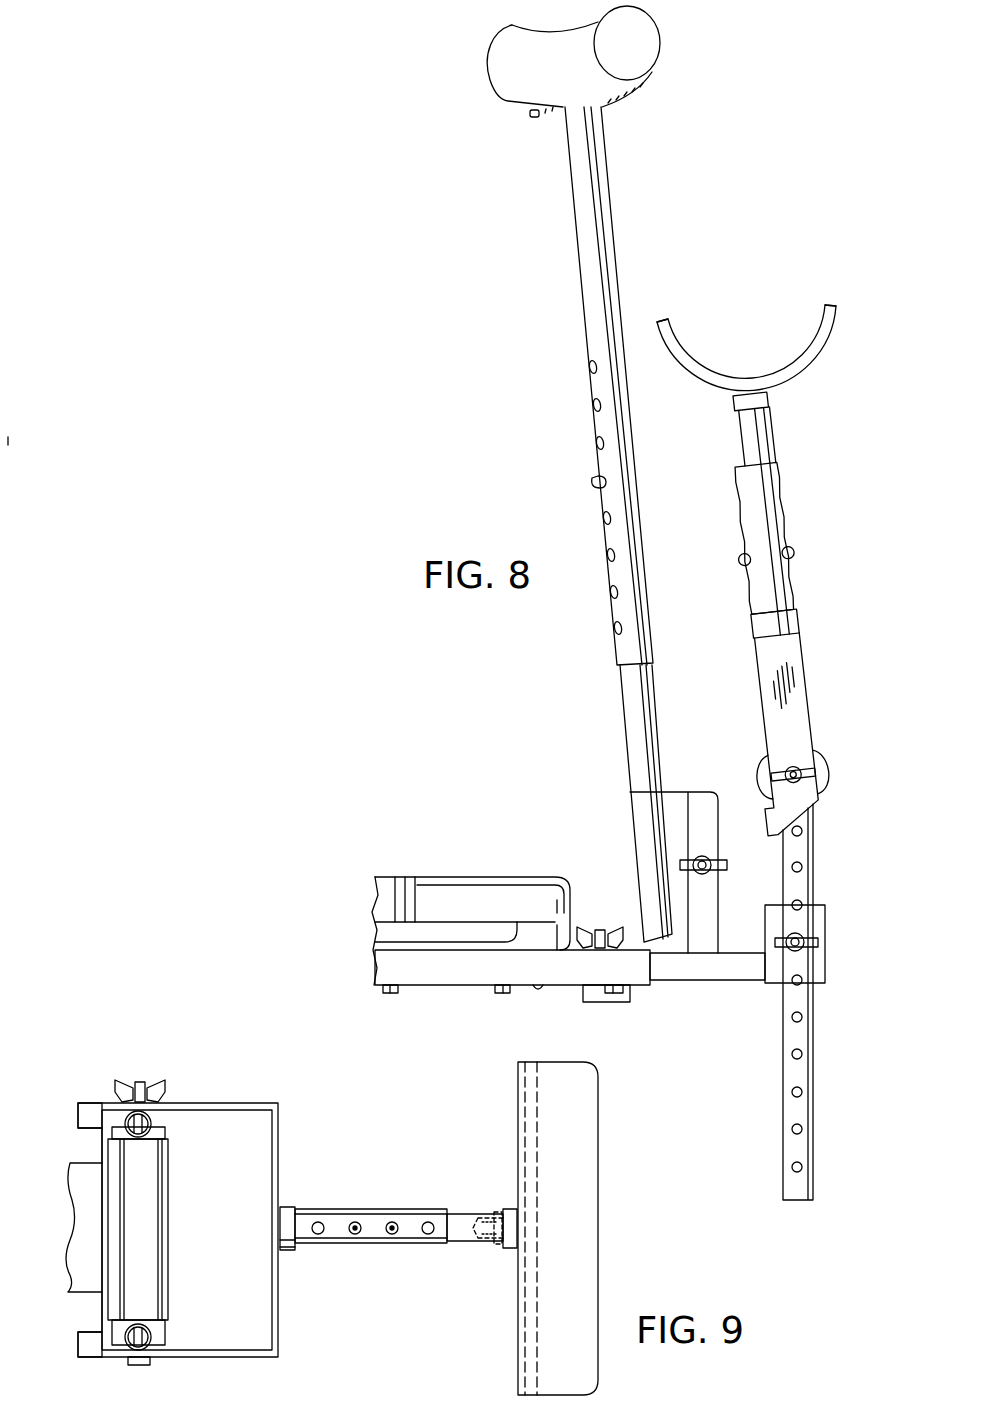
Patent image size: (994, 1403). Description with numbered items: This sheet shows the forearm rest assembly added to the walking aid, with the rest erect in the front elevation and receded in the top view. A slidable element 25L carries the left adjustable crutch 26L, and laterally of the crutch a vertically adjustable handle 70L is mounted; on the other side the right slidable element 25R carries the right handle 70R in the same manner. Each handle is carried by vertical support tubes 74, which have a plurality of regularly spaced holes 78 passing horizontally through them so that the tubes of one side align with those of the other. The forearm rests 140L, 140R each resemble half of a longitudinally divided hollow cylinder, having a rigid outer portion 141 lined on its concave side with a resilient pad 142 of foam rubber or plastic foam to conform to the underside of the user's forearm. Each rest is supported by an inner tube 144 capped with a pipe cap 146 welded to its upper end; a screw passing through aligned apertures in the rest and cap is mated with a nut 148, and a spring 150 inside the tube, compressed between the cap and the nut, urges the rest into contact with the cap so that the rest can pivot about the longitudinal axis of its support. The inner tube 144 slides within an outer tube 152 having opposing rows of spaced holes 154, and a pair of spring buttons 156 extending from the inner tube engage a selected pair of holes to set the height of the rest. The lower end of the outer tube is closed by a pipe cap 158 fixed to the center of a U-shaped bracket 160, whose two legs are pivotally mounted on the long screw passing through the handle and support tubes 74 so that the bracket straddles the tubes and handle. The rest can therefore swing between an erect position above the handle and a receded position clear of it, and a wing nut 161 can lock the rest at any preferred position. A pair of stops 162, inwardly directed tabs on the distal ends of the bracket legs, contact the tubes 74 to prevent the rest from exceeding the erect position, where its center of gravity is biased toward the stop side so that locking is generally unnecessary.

In FIG. 8, the left adjustable crutch 26L is at (556, 170).
In FIG. 8, the left slidable element 25L is at (690, 985).
In FIG. 9, the right slidable element 25R is at (82, 1185).
In FIG. 8, the left vertically adjustable handle 70L is at (826, 778).
In FIG. 9, the right vertically adjustable handle 70R is at (170, 1218).
In FIG. 8, the vertical support tube 74 is at (812, 1055).
In FIG. 9, the vertical support tube 74 is at (152, 1114).
In FIG. 8, the spaced holes 78 is at (800, 1128).
In FIG. 8, the left forearm rest 140L is at (754, 360).
In FIG. 9, the right forearm rest 140R is at (612, 1255).
In FIG. 8, the rigid outer portion 141 is at (706, 386).
In FIG. 9, the rigid outer portion 141 is at (519, 1110).
In FIG. 8, the resilient pad 142 is at (815, 322).
In FIG. 9, the resilient pad 142 is at (538, 1178).
In FIG. 8, the inner tube 144 is at (740, 445).
In FIG. 9, the inner tube 144 is at (463, 1244).
In FIG. 8, the pipe cap 146 is at (770, 398).
In FIG. 9, the pipe cap 146 is at (510, 1250).
In FIG. 9, the nut 148 is at (478, 1218).
In FIG. 9, the spring 150 is at (494, 1215).
In FIG. 8, the outer tube 152 is at (786, 500).
In FIG. 9, the outer tube 152 is at (375, 1245).
In FIG. 9, the spaced holes 154 is at (392, 1223).
In FIG. 8, the spring buttons 156 is at (742, 557).
In FIG. 9, the spring buttons 156 is at (352, 1225).
In FIG. 8, the pipe cap 158 is at (800, 625).
In FIG. 9, the pipe cap 158 is at (287, 1254).
In FIG. 8, the U-shaped bracket 160 is at (808, 700).
In FIG. 9, the U-shaped bracket 160 is at (279, 1120).
In FIG. 8, the wing nut 161 is at (786, 770).
In FIG. 9, the wing nut 161 is at (160, 1092).
In FIG. 8, the stops 162 is at (765, 820).
In FIG. 9, the stops 162 is at (78, 1118).